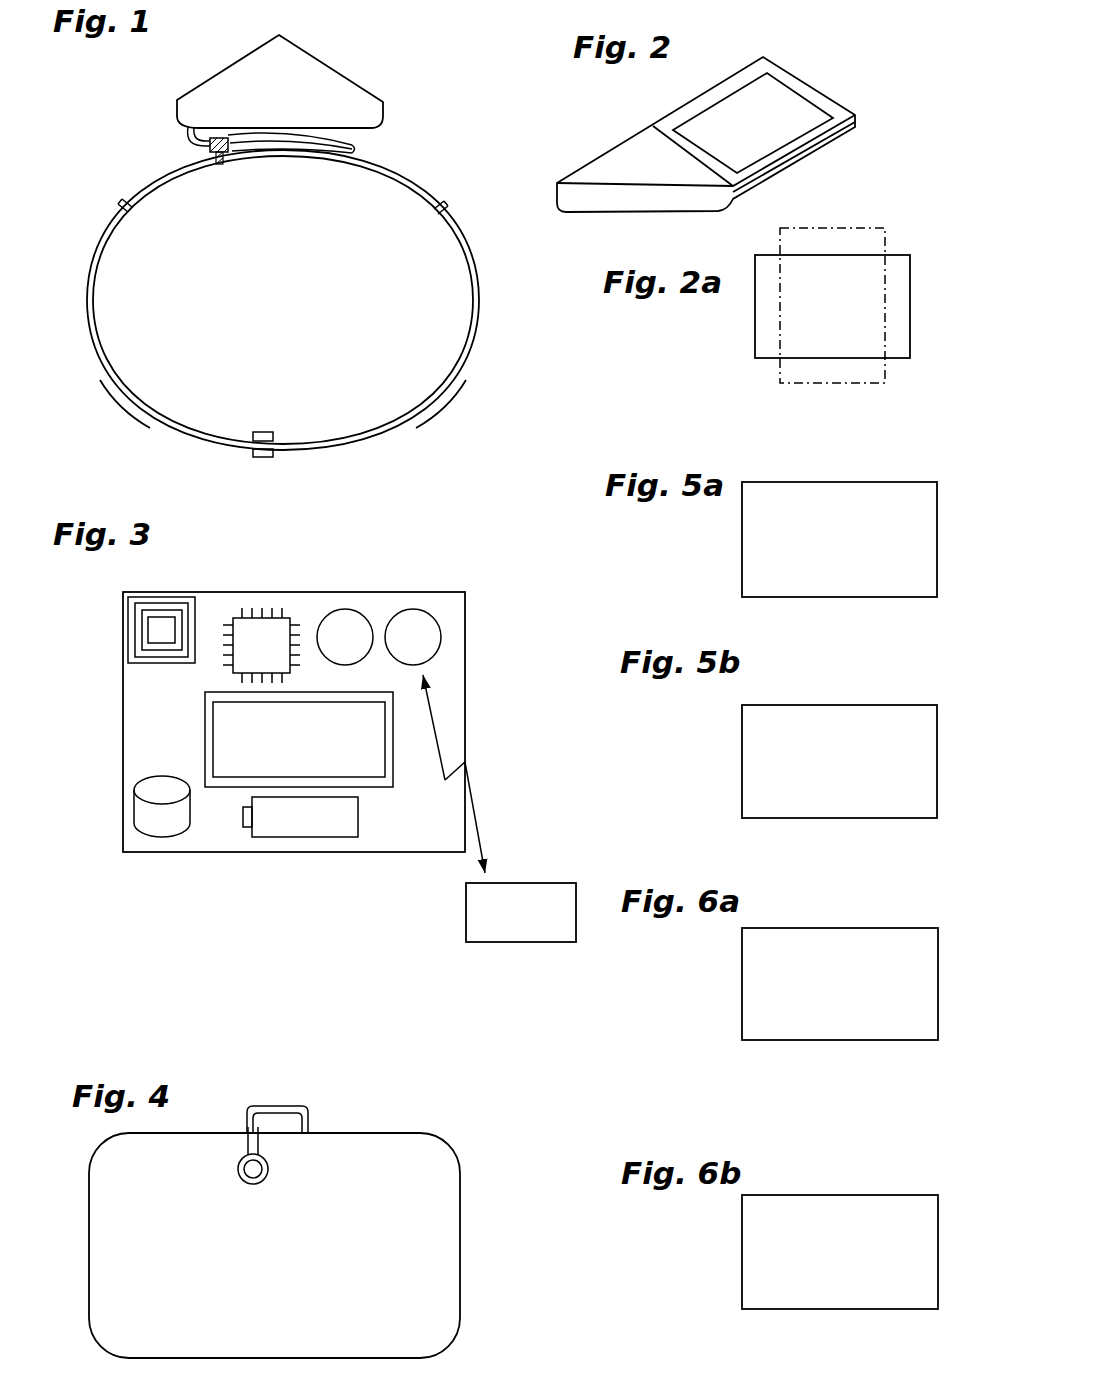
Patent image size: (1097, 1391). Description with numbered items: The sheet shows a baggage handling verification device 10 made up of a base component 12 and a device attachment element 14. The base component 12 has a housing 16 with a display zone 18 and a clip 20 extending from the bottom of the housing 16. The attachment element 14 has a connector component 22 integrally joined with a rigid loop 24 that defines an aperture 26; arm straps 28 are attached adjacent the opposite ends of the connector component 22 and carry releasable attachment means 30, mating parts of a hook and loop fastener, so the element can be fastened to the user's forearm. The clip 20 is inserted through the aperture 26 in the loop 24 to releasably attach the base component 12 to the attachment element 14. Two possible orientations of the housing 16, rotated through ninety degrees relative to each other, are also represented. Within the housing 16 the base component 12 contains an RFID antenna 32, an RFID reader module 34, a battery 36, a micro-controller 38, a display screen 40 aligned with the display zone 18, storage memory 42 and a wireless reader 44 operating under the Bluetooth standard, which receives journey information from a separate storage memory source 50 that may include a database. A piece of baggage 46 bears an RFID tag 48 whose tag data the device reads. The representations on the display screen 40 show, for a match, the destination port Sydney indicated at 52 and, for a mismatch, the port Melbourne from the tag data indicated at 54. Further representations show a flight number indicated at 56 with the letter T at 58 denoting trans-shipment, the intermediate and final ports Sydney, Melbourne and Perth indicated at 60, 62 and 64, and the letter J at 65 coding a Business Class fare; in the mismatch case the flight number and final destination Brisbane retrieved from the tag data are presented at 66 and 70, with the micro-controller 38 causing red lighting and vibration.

In FIG. 1, the baggage handling verification device 10 is at (455, 182).
In FIG. 2A, the baggage handling verification device 10 is at (890, 223).
In FIG. 1, the base component 12 is at (345, 75).
In FIG. 1, the device attachment element 14 is at (336, 172).
In FIG. 1, the housing 16 is at (195, 103).
In FIG. 2, the display zone 18 is at (772, 96).
In FIG. 1, the clip 20 is at (290, 147).
In FIG. 1, the connector component 22 is at (162, 185).
In FIG. 1, the rigid loop 24 is at (218, 137).
In FIG. 1, the aperture 26 is at (219, 168).
In FIG. 1, the arm straps 28 is at (132, 413).
In FIG. 1, the releasable attachment means 30 is at (243, 446).
In FIG. 3, the RFID antenna 32 is at (140, 666).
In FIG. 3, the RFID reader module 34 is at (346, 608).
In FIG. 3, the battery 36 is at (293, 822).
In FIG. 3, the micro-controller 38 is at (247, 630).
In FIG. 3, the display screen 40 is at (288, 753).
In FIG. 5A, the display screen 40 is at (828, 482).
In FIG. 5B, the display screen 40 is at (828, 705).
In FIG. 6A, the display screen 40 is at (802, 928).
In FIG. 6B, the display screen 40 is at (802, 1195).
In FIG. 3, the storage memory 42 is at (157, 822).
In FIG. 3, the wireless reader 44 is at (415, 608).
In FIG. 4, the piece of baggage 46 is at (390, 1145).
In FIG. 4, the RFID tag 48 is at (242, 1184).
In FIG. 3, the separate storage memory source 50 is at (490, 944).
In FIG. 5A, the destination port indication SYD 52 is at (853, 560).
In FIG. 5B, the destination port indication MEL 54 is at (853, 779).
In FIG. 6A, the flight number indication 56 is at (846, 934).
In FIG. 6A, the letter T indication 58 is at (863, 1018).
In FIG. 6A, the destination port indication SYD 60 is at (786, 998).
In FIG. 6A, the destination port indication MEL 62 is at (828, 998).
In FIG. 6A, the destination port indication PER 64 is at (904, 968).
In FIG. 6A, the letter J indication 65 is at (840, 1028).
In FIG. 6B, the flight number indication 66 is at (846, 1202).
In FIG. 6B, the final destination port indication BNE 70 is at (828, 1263).